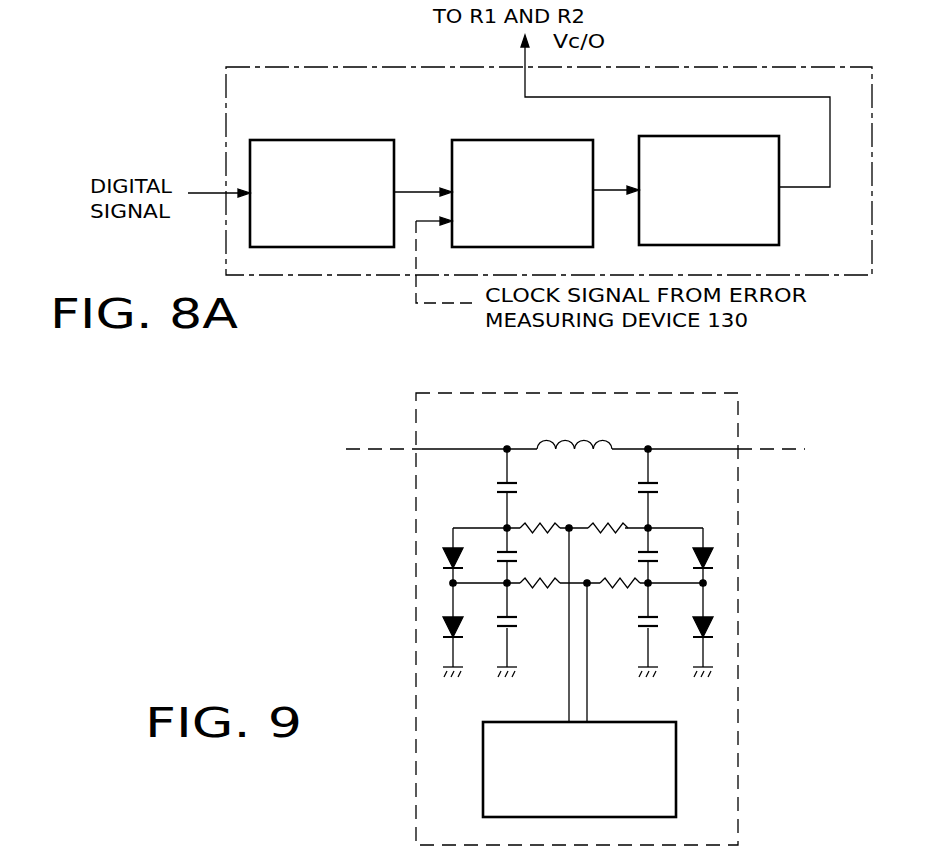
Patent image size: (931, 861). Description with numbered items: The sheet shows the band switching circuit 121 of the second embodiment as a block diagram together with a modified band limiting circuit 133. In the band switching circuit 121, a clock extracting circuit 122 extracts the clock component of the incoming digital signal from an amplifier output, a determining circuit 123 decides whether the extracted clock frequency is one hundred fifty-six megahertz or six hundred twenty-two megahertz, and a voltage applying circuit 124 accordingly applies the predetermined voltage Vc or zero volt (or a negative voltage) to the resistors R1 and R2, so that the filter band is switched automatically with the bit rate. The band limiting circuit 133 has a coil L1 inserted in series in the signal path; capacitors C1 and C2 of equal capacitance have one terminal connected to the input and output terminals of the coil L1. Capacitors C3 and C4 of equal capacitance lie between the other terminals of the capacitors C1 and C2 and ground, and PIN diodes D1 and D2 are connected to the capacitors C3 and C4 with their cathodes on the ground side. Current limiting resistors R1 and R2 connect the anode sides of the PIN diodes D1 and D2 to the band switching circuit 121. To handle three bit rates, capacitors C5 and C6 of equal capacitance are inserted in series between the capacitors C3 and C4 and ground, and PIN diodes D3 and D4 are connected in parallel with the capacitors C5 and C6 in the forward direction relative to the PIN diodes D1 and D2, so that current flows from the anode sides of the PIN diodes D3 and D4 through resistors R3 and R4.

In FIG. 8A, the band switching circuit 121 is at (226, 128).
In FIG. 9, the band switching circuit 121 is at (676, 755).
In FIG. 8A, the clock extracting circuit 122 is at (364, 140).
In FIG. 8A, the determining circuit 123 is at (469, 140).
In FIG. 8A, the voltage applying circuit 124 is at (779, 222).
In FIG. 9, the band limiting circuit 133 is at (416, 427).
In FIG. 9, the coil L1 is at (582, 439).
In FIG. 9, the capacitor C1 is at (495, 492).
In FIG. 9, the capacitor C2 is at (660, 491).
In FIG. 9, the capacitor C3 is at (527, 549).
In FIG. 9, the capacitor C4 is at (638, 556).
In FIG. 9, the capacitor C5 is at (512, 630).
In FIG. 9, the capacitor C6 is at (640, 630).
In FIG. 9, the current limiting resistor R1 is at (540, 509).
In FIG. 9, the current limiting resistor R2 is at (608, 509).
In FIG. 9, the resistor R3 is at (540, 601).
In FIG. 9, the resistor R4 is at (616, 589).
In FIG. 9, the PIN diode D1 is at (447, 545).
In FIG. 9, the PIN diode D2 is at (708, 544).
In FIG. 9, the PIN diode D3 is at (462, 629).
In FIG. 9, the PIN diode D4 is at (698, 626).